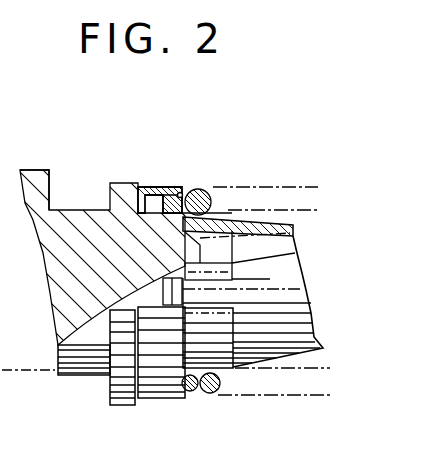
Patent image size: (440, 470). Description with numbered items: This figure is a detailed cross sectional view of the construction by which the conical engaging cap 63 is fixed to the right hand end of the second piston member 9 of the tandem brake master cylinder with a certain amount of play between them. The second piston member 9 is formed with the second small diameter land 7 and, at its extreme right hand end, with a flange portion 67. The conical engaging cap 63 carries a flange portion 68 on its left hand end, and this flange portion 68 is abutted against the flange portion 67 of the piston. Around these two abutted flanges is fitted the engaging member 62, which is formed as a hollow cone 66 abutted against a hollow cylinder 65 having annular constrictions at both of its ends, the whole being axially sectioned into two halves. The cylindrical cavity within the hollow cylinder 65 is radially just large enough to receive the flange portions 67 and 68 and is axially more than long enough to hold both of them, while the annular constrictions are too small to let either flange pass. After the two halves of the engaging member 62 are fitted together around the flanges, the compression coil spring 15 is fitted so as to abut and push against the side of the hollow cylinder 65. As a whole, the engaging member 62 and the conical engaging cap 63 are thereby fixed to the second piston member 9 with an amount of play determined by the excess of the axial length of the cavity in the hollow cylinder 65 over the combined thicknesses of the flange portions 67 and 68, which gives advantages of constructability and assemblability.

The second small diameter land 7 is at (36, 176).
The second piston member 9 is at (82, 218).
The compression coil spring 15 is at (274, 186).
The engaging member 62 is at (174, 188).
The conical engaging cap 63 is at (296, 229).
The hollow cylinder 65 is at (152, 188).
The hollow cone 66 is at (216, 190).
The flange portion 67 is at (165, 197).
The flange portion 68 is at (182, 196).